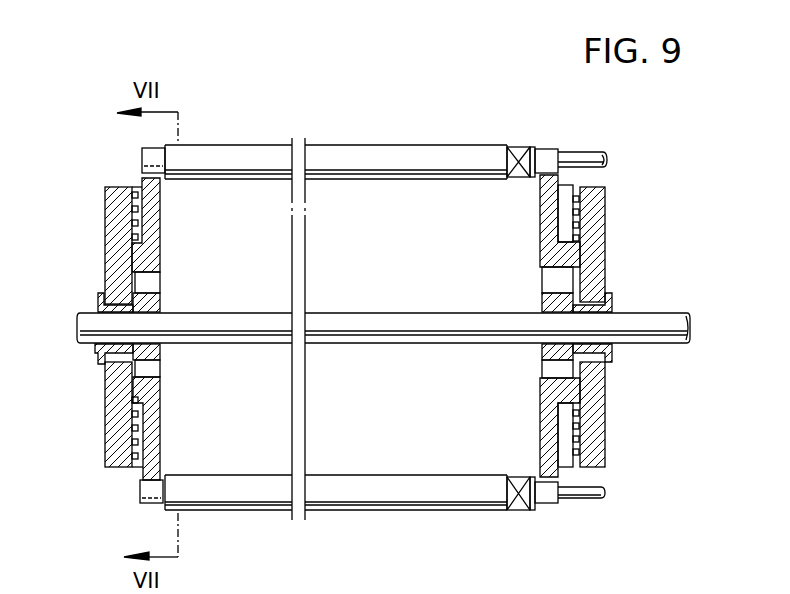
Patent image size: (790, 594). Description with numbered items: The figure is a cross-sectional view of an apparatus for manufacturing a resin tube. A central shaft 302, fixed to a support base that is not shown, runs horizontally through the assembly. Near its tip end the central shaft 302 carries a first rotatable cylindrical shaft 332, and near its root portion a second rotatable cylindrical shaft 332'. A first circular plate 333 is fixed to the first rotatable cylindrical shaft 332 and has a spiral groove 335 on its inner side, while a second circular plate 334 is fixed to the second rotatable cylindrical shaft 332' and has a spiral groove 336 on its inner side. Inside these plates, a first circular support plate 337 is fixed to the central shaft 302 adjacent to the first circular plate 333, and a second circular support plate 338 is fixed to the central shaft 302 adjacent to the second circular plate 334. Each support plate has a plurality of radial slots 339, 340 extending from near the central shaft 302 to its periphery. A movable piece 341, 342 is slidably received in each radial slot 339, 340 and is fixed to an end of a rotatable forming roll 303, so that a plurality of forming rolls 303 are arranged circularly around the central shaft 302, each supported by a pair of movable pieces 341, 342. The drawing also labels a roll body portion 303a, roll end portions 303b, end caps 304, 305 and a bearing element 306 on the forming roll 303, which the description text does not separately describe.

The central shaft 302 is at (357, 313).
The rotatable forming roll 303 is at (333, 145).
The cylinder body 303a is at (387, 145).
The cylinder shaft end 303b is at (592, 152).
The end cap 304 is at (145, 160).
The end cap 305 is at (555, 148).
The bearing 306 is at (514, 146).
The first rotatable cylindrical shaft 332 is at (97, 309).
The second rotatable cylindrical shaft 332' is at (633, 339).
The first circular plate 333 is at (112, 214).
The second circular plate 334 is at (596, 238).
The spiral groove 335 is at (134, 218).
The spiral groove 336 is at (573, 230).
The first circular support plate 337 is at (162, 303).
The second circular support plate 338 is at (547, 302).
The radial slot 339 is at (155, 281).
The radial slot 340 is at (552, 281).
The movable piece 341 is at (157, 193).
The movable piece 342 is at (550, 202).